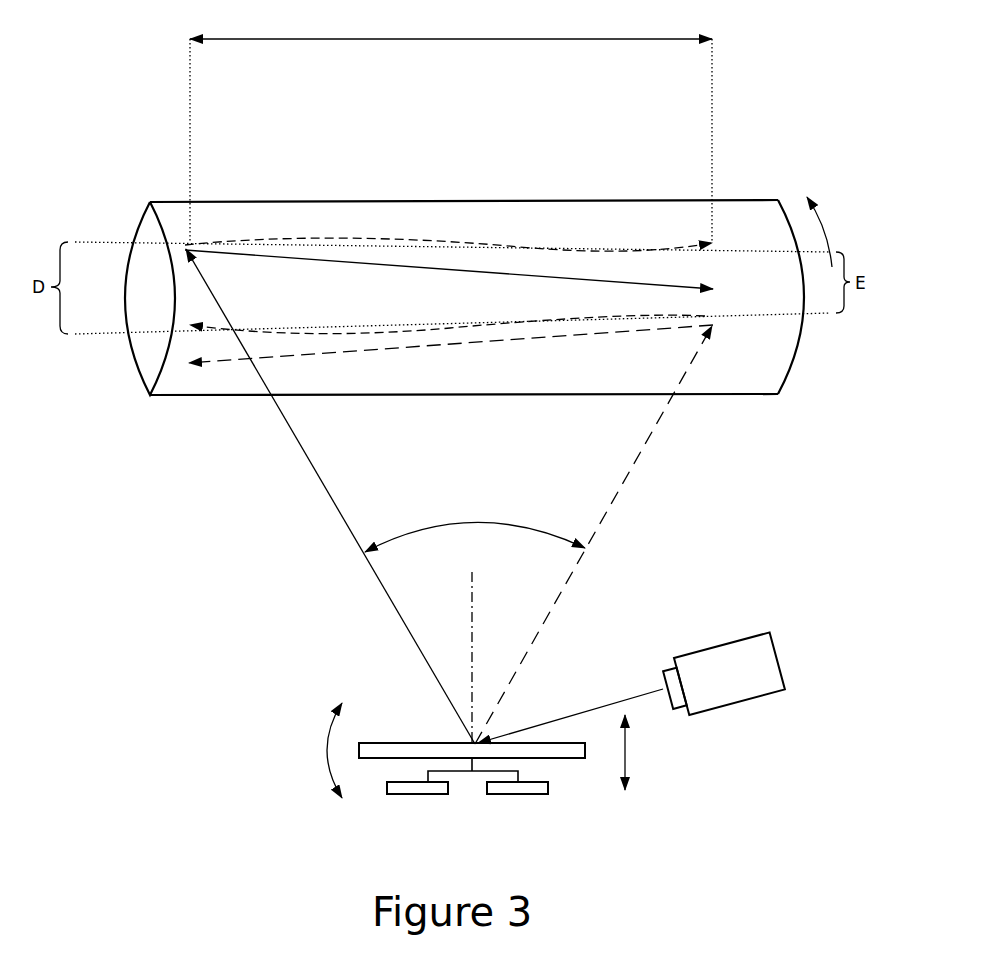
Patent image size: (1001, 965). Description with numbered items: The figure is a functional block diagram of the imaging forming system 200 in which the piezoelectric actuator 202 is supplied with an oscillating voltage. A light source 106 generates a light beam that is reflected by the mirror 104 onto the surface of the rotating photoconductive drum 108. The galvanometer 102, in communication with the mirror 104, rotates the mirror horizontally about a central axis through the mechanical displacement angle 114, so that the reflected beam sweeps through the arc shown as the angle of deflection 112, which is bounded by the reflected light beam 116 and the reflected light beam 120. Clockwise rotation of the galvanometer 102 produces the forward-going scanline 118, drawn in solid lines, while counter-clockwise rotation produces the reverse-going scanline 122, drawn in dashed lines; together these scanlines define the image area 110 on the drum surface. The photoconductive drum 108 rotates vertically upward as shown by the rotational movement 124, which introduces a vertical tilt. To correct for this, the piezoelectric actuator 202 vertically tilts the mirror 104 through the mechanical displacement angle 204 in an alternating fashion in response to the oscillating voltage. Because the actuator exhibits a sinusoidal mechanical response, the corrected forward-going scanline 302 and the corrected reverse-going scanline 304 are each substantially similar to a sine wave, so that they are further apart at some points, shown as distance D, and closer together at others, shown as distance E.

The galvanometer 102 is at (430, 795).
The mirror 104 is at (561, 760).
The light source 106 is at (766, 630).
The photoconductive drum 108 is at (750, 199).
The image area 110 is at (237, 38).
The angle of deflection 112 is at (485, 521).
The mechanical displacement angle 114 is at (326, 757).
The reflected light beam 116 is at (307, 455).
The forward-going scanline 118 is at (268, 257).
The reflected light beam 120 is at (640, 452).
The reverse-going scanline 122 is at (647, 332).
The rotational movement 124 is at (820, 223).
The imaging forming system 200 is at (198, 554).
The piezoelectric actuator 202 is at (537, 795).
The mechanical displacement angle 204 is at (627, 753).
The corrected forward-going scanline 302 is at (404, 241).
The corrected reverse-going scanline 304 is at (395, 331).